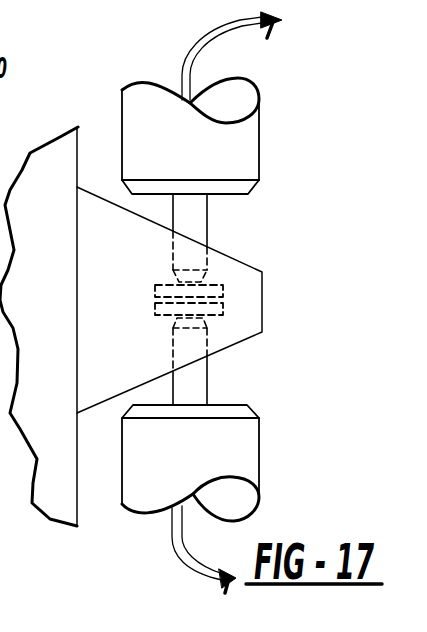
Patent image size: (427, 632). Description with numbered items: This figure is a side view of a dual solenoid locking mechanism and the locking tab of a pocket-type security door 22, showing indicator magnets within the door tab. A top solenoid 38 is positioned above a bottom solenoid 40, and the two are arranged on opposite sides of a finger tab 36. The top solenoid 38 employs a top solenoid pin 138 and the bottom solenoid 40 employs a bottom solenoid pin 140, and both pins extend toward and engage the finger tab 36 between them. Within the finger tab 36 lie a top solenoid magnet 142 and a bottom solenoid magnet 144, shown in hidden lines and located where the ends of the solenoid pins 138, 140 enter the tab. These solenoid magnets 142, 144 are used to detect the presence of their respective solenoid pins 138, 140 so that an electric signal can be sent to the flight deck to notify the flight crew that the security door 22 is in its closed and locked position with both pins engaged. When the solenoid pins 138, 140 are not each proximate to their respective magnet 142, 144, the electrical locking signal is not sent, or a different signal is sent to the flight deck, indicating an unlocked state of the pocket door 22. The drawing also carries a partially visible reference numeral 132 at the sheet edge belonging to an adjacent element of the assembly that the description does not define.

The security door 22 is at (78, 127).
The finger tab 36 is at (262, 300).
The top solenoid 38 is at (259, 137).
The bottom solenoid 40 is at (259, 463).
The frame member 132 is at (12, 12).
The top solenoid pin 138 is at (207, 220).
The bottom solenoid pin 140 is at (207, 378).
The top solenoid magnet 142 is at (223, 286).
The bottom solenoid magnet 144 is at (223, 314).